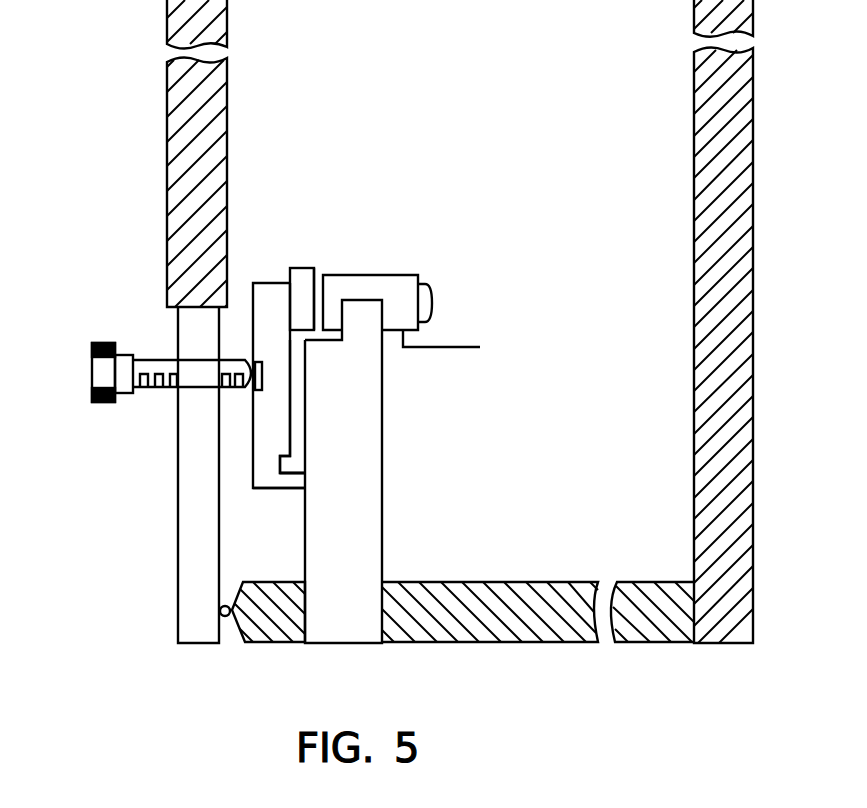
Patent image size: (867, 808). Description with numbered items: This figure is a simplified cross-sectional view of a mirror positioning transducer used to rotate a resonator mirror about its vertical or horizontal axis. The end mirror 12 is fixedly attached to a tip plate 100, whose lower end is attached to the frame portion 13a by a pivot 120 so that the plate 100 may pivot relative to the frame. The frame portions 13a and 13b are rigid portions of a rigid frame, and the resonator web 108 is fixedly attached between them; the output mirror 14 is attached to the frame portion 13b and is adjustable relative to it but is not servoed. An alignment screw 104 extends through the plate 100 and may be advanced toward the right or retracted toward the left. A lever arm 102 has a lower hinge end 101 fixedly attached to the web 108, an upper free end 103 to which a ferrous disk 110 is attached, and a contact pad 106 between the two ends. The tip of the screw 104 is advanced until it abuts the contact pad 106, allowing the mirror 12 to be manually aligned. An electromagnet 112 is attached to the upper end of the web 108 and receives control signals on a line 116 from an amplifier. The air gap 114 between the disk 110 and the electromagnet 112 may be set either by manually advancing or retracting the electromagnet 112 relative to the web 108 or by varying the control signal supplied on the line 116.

The end mirror 12 is at (228, 70).
The output mirror 14 is at (692, 65).
The frame portion 13a is at (262, 581).
The frame portion 13b is at (630, 581).
The tip plate 100 is at (177, 532).
The pivot 120 is at (220, 613).
The alignment screw 104 is at (247, 364).
The contact pad 106 is at (262, 377).
The upper free end 103 is at (266, 283).
The lever arm 102 is at (293, 432).
The lower hinge end 101 is at (278, 480).
The ferrous disk 110 is at (302, 268).
The air gap 114 is at (320, 270).
The electromagnet 112 is at (400, 274).
The line 116 is at (450, 348).
The resonator web 108 is at (394, 417).